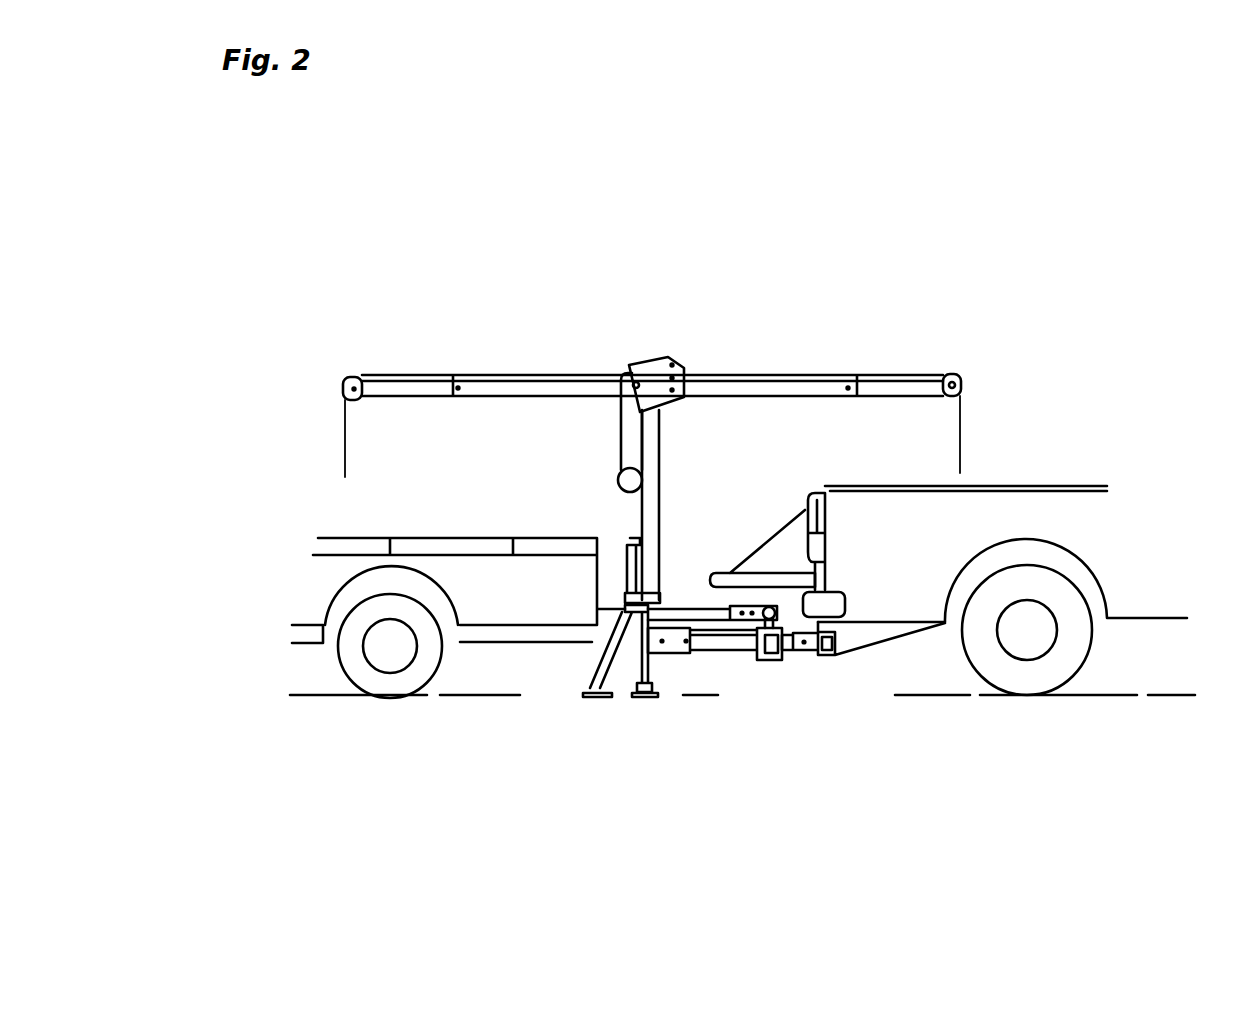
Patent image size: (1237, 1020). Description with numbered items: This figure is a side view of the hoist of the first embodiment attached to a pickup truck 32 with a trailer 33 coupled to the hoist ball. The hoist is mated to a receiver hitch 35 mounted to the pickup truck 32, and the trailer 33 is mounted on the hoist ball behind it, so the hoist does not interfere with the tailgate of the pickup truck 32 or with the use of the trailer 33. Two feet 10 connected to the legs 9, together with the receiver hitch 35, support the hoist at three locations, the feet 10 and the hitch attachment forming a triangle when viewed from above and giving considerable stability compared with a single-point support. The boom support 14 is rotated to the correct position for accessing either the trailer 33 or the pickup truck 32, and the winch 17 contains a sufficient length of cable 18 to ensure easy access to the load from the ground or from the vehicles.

The legs 9 is at (648, 672).
The foot 10 is at (645, 694).
The boom support 14 is at (660, 503).
The winch 17 is at (618, 478).
The cable 18 is at (407, 376).
The pickup truck 32 is at (998, 487).
The trailer 33 is at (446, 538).
The receiver hitch 35 is at (826, 657).